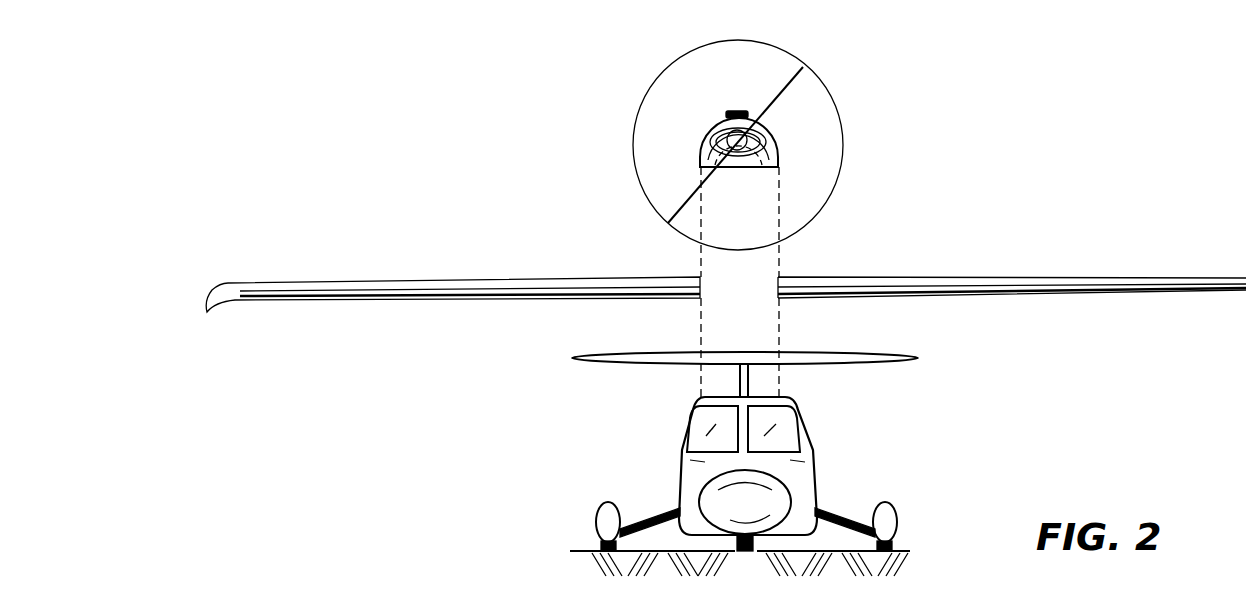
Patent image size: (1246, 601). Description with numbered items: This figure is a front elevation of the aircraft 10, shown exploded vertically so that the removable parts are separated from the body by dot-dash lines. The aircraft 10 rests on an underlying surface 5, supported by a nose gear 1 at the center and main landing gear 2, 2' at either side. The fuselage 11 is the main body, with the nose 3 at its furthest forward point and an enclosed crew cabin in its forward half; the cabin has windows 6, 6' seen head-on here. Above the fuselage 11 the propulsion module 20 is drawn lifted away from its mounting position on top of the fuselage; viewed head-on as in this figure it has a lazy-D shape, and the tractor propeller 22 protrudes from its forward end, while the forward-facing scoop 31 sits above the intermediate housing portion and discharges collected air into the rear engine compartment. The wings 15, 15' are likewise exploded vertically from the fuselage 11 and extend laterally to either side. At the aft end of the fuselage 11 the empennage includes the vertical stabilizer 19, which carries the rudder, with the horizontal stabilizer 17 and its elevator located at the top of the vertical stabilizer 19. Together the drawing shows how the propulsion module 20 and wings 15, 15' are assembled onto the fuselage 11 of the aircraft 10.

The nose gear 1 is at (738, 553).
The main landing gear 2 is at (597, 551).
The main landing gear 2' is at (914, 529).
The nose 3 is at (708, 498).
The underlying surface 5 is at (580, 550).
The left window 6 is at (666, 429).
The right window 6' is at (820, 429).
The aircraft 10 is at (518, 176).
The fuselage 11 is at (832, 487).
The wing 15 is at (453, 260).
The wing 15' is at (1012, 250).
The horizontal stabilizer 17 is at (880, 354).
The vertical stabilizer 19 is at (750, 378).
The propulsion module 20 is at (790, 145).
The tractor propeller 22 is at (800, 77).
The forward-facing scoop 31 is at (735, 112).